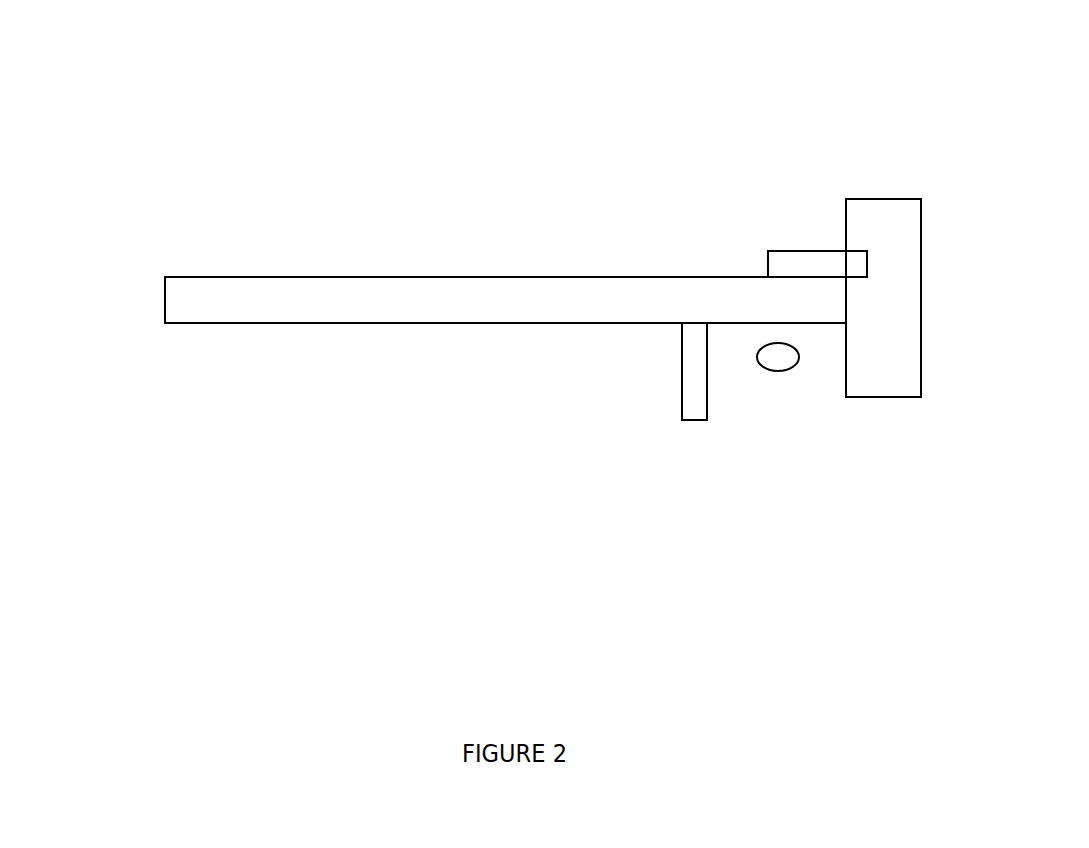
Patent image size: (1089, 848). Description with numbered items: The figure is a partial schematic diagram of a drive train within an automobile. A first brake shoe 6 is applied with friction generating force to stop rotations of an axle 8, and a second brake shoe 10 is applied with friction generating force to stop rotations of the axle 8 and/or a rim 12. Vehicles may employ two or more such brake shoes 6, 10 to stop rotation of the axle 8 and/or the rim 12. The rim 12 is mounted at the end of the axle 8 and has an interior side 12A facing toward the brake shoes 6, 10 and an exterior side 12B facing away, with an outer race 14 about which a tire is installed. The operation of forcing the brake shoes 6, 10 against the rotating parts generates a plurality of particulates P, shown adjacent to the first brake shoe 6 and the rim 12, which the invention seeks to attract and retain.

The first brake shoe 6 is at (682, 373).
The axle 8 is at (505, 300).
The second brake shoe 10 is at (815, 251).
The rim 12 is at (883, 298).
The interior side 12A is at (845, 362).
The exterior side 12B is at (921, 297).
The outer race 14 is at (896, 199).
The particulates P is at (777, 370).